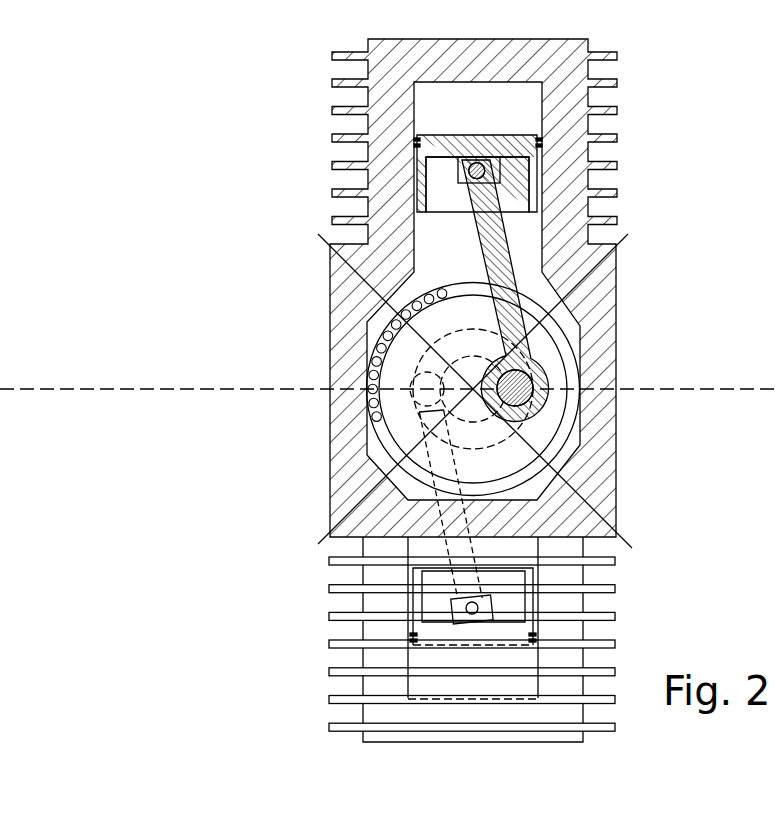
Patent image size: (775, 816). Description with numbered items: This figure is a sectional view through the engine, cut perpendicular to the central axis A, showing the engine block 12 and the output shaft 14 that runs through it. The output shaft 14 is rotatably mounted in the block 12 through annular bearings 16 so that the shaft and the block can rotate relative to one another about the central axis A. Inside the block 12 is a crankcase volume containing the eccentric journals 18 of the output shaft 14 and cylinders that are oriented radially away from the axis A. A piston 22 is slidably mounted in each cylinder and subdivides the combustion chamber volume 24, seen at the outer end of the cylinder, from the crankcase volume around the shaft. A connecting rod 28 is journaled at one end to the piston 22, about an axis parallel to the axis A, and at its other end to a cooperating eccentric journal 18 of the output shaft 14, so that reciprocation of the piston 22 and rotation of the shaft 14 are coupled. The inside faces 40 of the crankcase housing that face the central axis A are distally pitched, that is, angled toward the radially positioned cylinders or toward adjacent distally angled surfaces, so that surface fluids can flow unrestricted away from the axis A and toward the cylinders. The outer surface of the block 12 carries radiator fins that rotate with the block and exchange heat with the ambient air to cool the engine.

The engine block 12 is at (608, 270).
The output shaft 14 is at (550, 352).
The annular bearings 16 is at (425, 295).
The eccentric journals 18 is at (532, 384).
The piston 22 is at (517, 140).
The combustion chamber volume 24 is at (518, 102).
The connecting rod 28 is at (497, 233).
The inside faces of the crankcase housing 40 is at (568, 460).
The central axis A is at (472, 365).